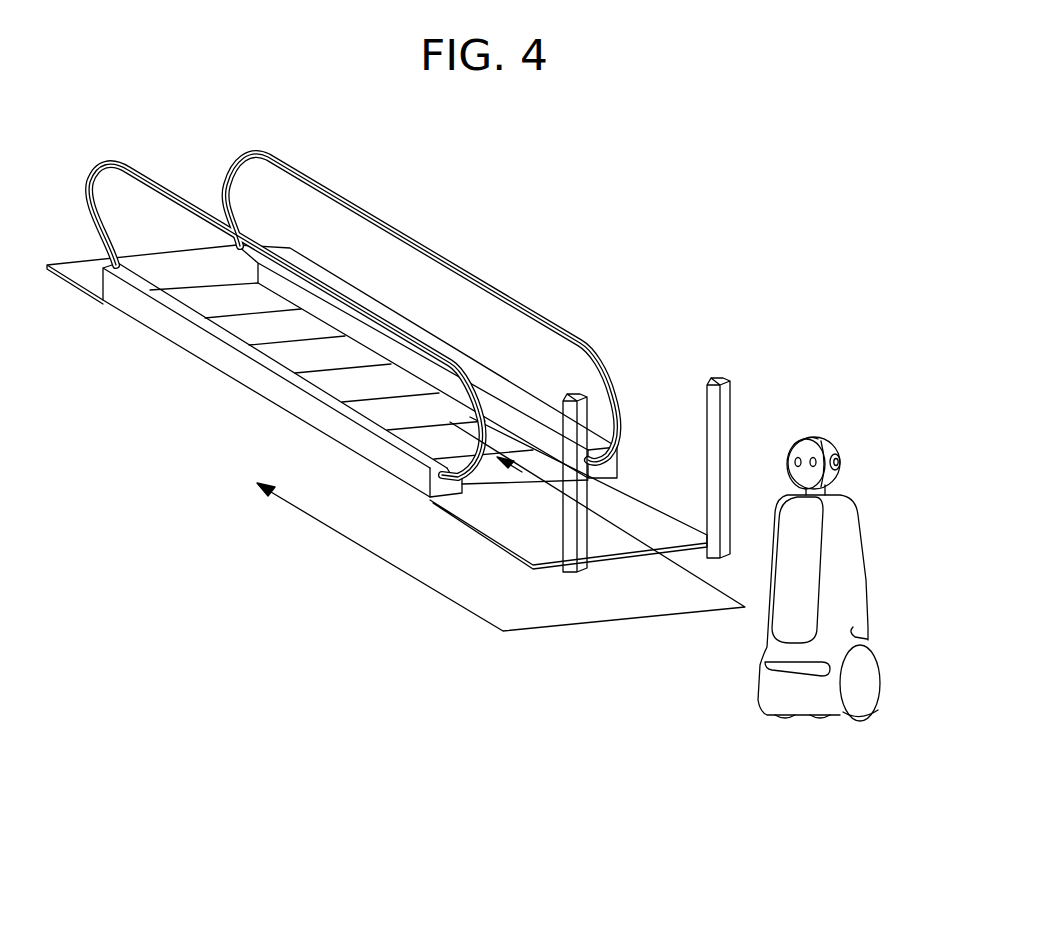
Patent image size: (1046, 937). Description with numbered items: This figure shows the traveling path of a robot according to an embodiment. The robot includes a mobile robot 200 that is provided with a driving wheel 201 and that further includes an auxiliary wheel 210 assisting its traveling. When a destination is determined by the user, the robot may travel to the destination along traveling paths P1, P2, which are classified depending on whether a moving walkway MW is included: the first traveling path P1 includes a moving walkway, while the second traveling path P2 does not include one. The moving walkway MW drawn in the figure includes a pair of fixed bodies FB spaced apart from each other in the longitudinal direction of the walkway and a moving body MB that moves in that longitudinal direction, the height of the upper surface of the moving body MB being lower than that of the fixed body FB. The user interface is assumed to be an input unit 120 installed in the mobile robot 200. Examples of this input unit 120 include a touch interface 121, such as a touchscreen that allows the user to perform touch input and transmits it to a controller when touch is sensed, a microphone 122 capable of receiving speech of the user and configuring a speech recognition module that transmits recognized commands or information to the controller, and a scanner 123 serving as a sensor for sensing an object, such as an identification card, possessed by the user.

The moving walkway MW is at (388, 346).
The moving body MB is at (352, 352).
The fixed body FB is at (166, 262).
The first traveling path P1 is at (629, 534).
The second traveling path P2 is at (368, 552).
The mobile robot 200 is at (809, 588).
The input unit 120 is at (869, 466).
The touch interface 121 is at (803, 535).
The microphone 122 is at (841, 461).
The scanner 123 is at (855, 417).
The auxiliary wheel 210 is at (822, 720).
The driving wheel 201 is at (857, 717).